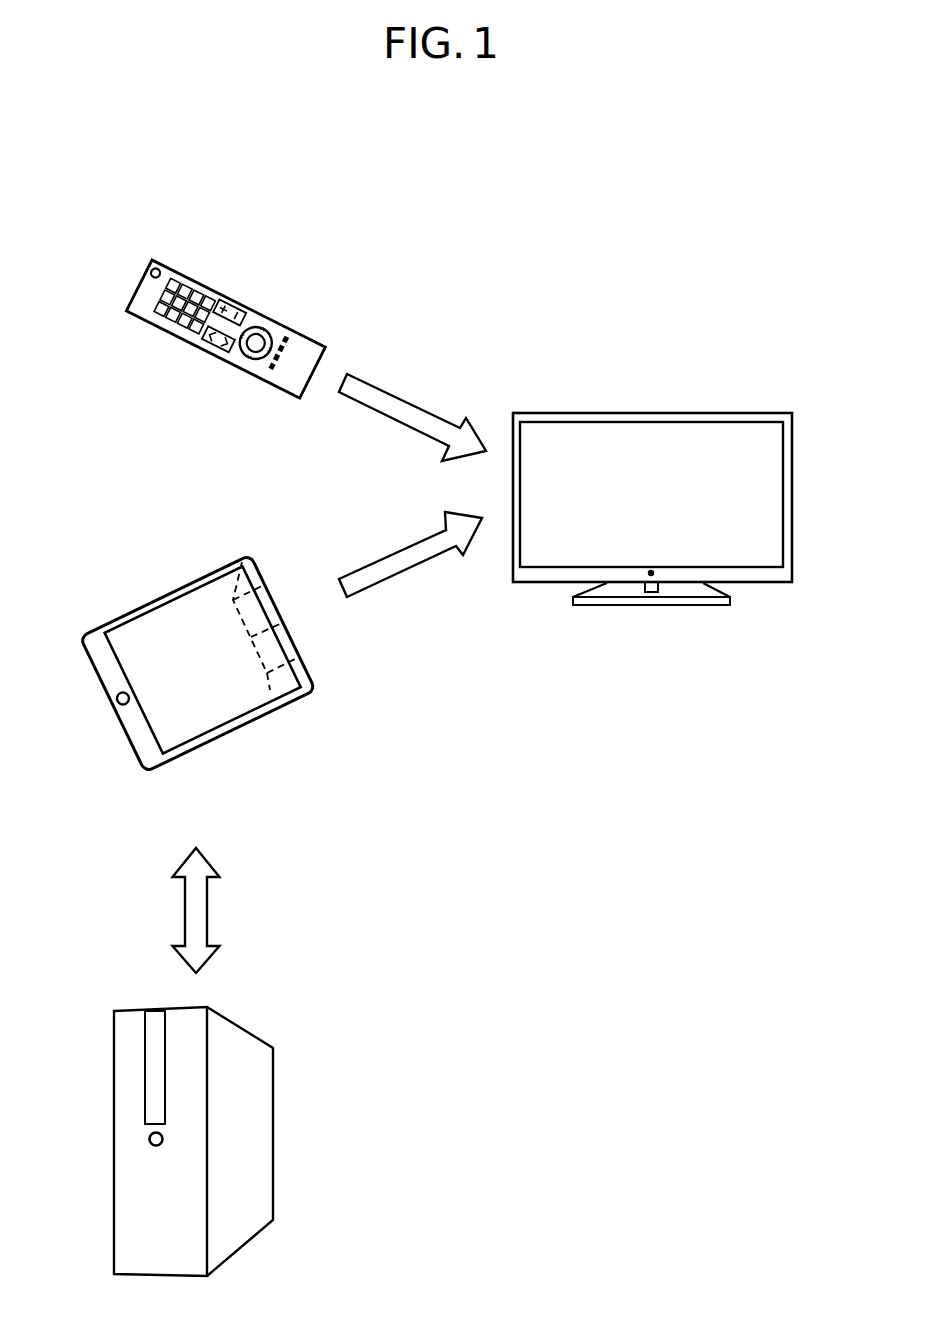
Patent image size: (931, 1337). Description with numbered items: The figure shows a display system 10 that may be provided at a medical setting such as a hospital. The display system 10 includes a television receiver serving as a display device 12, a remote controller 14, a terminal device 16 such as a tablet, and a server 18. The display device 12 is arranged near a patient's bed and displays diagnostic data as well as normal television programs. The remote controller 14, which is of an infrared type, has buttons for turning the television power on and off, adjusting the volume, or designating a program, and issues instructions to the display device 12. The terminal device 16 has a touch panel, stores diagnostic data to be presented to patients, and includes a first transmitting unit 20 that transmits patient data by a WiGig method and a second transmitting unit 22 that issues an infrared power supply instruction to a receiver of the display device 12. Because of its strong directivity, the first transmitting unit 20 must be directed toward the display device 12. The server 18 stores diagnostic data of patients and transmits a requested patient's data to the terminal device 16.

The display system 10 is at (521, 212).
The display device 12 is at (748, 412).
The remote controller 14 is at (143, 277).
The terminal device 16 is at (152, 601).
The server 18 is at (250, 1029).
The first transmitting unit 20 is at (242, 562).
The second transmitting unit 22 is at (270, 690).